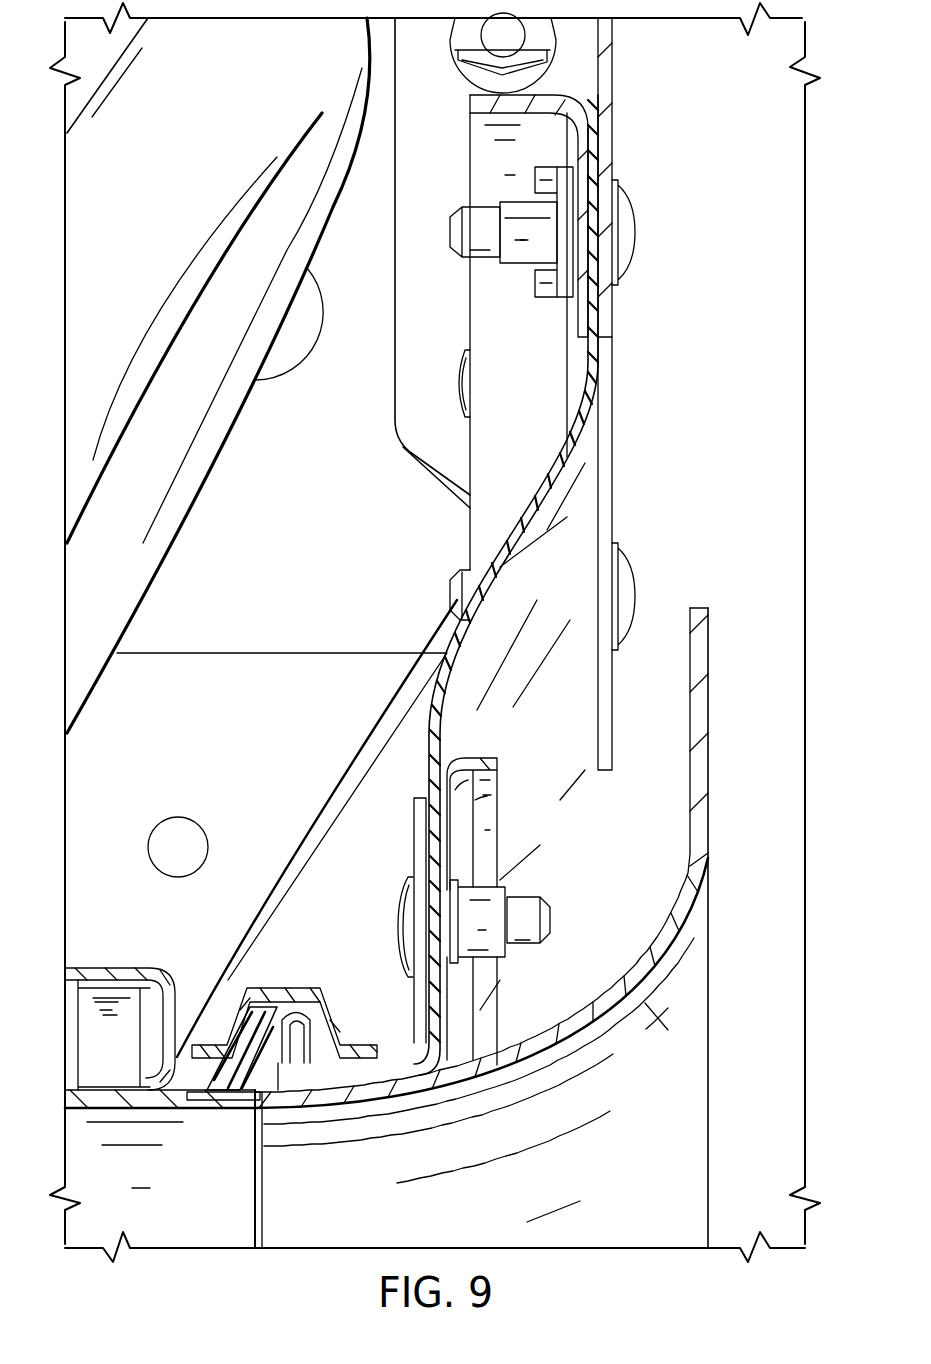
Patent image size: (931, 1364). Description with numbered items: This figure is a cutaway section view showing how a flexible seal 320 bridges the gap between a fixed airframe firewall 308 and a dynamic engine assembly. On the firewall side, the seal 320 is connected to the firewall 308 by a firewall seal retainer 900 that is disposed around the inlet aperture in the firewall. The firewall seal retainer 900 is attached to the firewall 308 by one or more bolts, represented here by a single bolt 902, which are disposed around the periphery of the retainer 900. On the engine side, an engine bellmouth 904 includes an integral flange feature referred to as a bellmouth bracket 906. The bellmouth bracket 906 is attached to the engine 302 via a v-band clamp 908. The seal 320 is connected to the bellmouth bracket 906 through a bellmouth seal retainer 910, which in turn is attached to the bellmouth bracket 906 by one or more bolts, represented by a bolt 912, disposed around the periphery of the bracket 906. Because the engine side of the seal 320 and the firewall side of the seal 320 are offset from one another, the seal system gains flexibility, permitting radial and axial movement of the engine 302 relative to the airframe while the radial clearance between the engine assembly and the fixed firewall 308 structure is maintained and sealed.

The engine 302 is at (208, 1110).
The firewall 308 is at (614, 83).
The seal 320 is at (553, 505).
The firewall seal retainer 900 is at (542, 115).
The bolt 902 is at (635, 230).
The engine bellmouth 904 is at (703, 1045).
The bellmouth bracket 906 is at (498, 763).
The v-band clamp 908 is at (295, 987).
The bellmouth seal retainer 910 is at (414, 828).
The bolt 912 is at (397, 920).